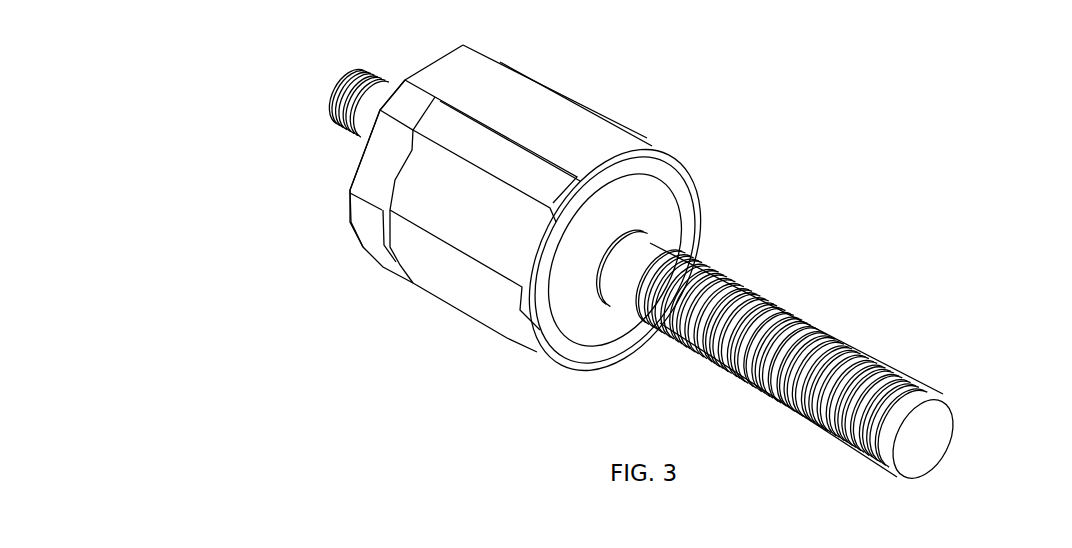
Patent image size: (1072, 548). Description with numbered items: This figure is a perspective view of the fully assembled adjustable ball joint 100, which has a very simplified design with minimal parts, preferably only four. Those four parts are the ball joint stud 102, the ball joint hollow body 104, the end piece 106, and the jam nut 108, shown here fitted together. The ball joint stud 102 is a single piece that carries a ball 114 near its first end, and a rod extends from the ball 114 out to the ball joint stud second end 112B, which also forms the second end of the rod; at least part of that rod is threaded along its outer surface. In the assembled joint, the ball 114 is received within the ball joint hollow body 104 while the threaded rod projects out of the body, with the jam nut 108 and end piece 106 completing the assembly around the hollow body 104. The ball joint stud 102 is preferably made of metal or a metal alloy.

The adjustable ball joint 100 is at (840, 154).
The ball joint stud 102 is at (778, 343).
The ball joint hollow body 104 is at (583, 145).
The end piece 106 is at (353, 137).
The jam nut 108 is at (377, 197).
The ball joint stud second end 112B is at (913, 440).
The ball 114 is at (568, 285).